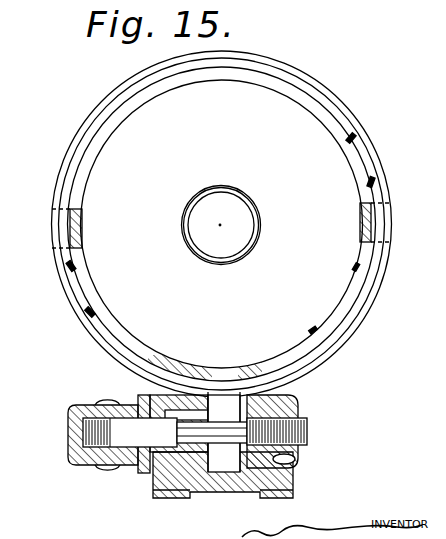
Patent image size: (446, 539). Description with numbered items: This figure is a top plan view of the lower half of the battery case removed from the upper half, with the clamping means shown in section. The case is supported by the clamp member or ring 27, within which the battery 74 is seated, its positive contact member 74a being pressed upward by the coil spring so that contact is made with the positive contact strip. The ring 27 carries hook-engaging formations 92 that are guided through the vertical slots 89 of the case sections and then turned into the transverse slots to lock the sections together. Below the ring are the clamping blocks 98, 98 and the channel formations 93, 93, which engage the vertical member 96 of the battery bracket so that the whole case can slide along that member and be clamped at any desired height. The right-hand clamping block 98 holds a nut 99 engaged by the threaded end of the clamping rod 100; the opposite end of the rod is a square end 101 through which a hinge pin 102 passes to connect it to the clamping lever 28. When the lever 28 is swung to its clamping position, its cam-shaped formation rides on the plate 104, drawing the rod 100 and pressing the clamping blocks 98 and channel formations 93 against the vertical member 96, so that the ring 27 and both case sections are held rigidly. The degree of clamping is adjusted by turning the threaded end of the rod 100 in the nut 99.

The clamp member or ring 27 is at (346, 105).
The battery 74 is at (285, 105).
The positive contact member 74a is at (232, 200).
The vertical slots 89 is at (83, 295).
The hook-engaging formations 92 is at (78, 233).
The clamping blocks 98 is at (180, 398).
The clamping rod 100 is at (226, 428).
The clamping lever 28 is at (73, 443).
The hinge pin 102 is at (103, 465).
The square end 101 is at (133, 443).
The plate 104 is at (147, 474).
The channel formations 93 is at (160, 493).
The vertical member 96 is at (227, 490).
The nut 99 is at (297, 463).